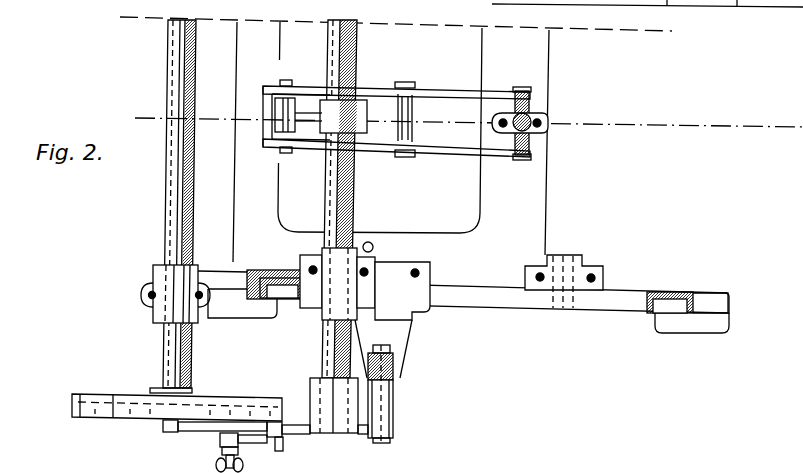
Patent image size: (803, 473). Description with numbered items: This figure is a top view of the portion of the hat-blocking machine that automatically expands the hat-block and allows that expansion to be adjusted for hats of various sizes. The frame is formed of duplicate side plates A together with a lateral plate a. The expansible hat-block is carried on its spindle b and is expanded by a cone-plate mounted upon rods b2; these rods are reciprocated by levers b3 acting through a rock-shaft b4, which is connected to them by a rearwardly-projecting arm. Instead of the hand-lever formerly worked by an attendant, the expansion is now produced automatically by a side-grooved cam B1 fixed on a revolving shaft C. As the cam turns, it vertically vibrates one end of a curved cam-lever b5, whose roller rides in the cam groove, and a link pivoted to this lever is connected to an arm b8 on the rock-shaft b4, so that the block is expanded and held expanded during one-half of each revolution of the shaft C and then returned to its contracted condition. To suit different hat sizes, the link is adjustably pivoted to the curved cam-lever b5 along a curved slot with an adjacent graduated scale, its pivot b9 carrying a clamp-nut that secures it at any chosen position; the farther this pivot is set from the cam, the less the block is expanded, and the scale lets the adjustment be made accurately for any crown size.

The side plates A is at (488, 301).
The lateral plate a is at (382, 137).
The side-grooved cam B1 is at (177, 399).
The revolving shaft C is at (170, 206).
The spindle b is at (532, 132).
The rods b2 is at (557, 111).
The levers b3 is at (389, 118).
The rock-shaft b4 is at (258, 452).
The curved cam-lever b5 is at (202, 426).
The arm b8 is at (306, 434).
The pivot b9 is at (221, 452).